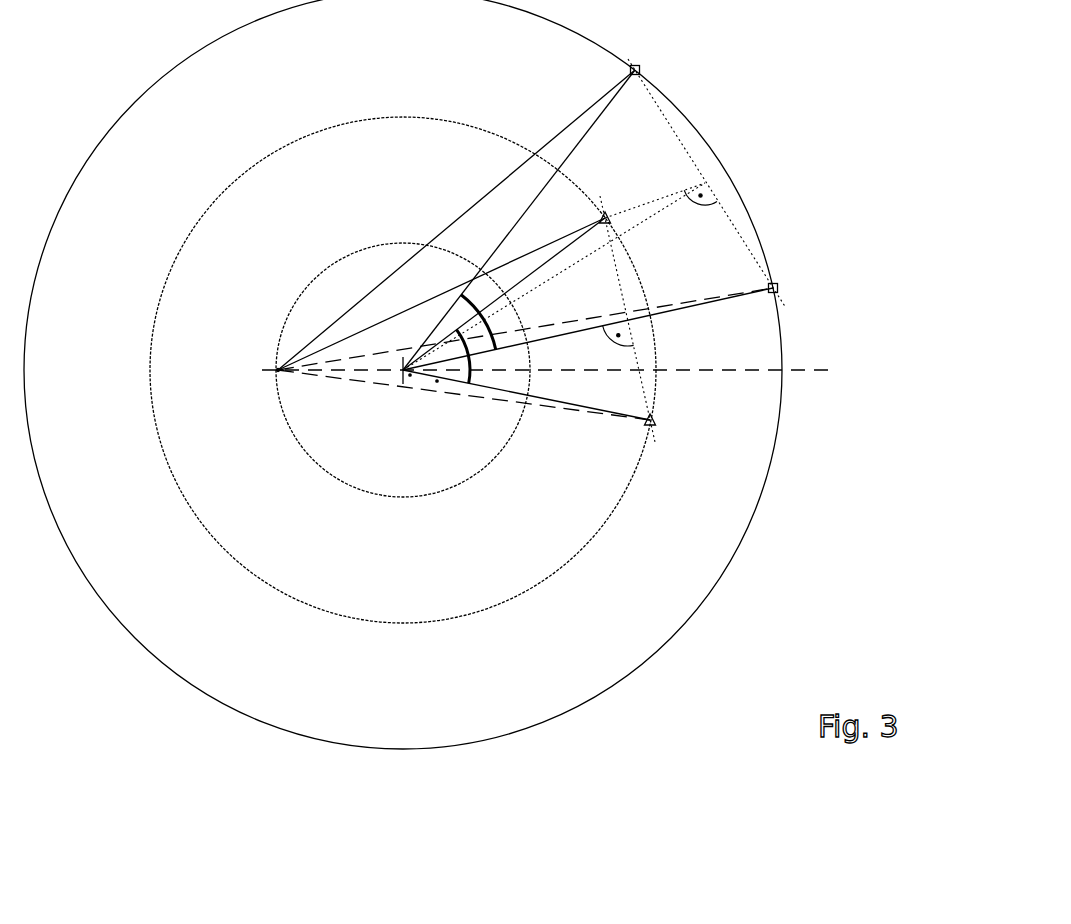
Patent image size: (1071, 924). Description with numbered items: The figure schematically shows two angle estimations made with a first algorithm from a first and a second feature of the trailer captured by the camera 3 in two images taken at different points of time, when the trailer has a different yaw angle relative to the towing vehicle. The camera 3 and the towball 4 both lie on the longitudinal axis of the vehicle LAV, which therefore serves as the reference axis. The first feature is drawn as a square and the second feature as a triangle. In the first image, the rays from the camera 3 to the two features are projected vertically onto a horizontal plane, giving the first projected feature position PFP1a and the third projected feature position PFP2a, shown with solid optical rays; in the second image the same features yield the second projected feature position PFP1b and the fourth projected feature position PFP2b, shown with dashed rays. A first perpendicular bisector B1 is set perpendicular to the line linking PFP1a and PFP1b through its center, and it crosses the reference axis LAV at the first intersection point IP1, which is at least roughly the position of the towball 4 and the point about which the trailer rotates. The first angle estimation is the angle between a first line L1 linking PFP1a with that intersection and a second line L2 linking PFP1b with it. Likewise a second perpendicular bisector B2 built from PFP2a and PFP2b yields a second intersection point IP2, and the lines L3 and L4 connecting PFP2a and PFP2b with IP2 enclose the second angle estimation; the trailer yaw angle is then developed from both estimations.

The camera 3 is at (268, 360).
The towball 4 is at (392, 390).
The first projected feature position PFP1a is at (641, 66).
The second projected feature position PFP1b is at (778, 285).
The third projected feature position PFP2a is at (610, 213).
The fourth projected feature position PFP2b is at (657, 426).
The first line L1 is at (575, 148).
The second line L2 is at (658, 314).
The first line linking the third projected feature position and the second intersect L3 is at (553, 258).
The second line linking the fourth projected feature position and the second interse L4 is at (548, 398).
The radius R is at (477, 202).
The longitudinal axis of the vehicle LAV is at (720, 302).
The first perpendicular bisector B1 is at (640, 220).
The second perpendicular bisector B2 is at (582, 335).
The first intersection point IP1 is at (416, 390).
The second intersection point IP2 is at (444, 396).